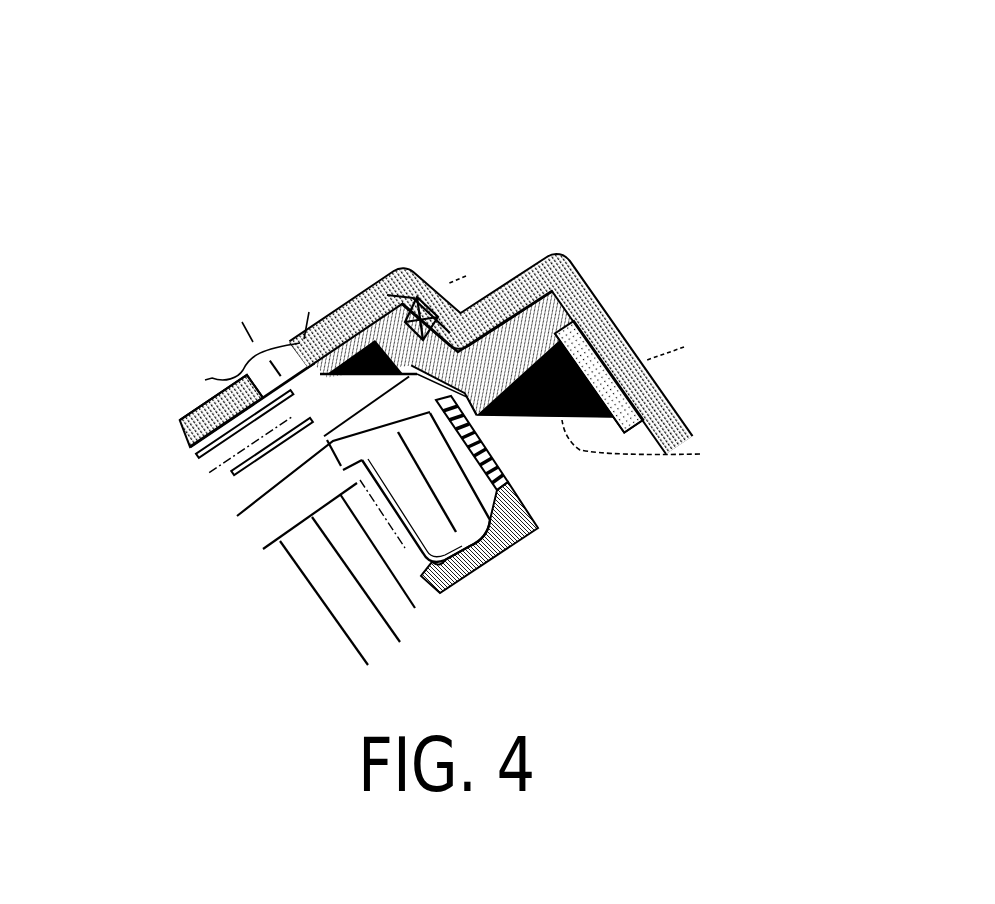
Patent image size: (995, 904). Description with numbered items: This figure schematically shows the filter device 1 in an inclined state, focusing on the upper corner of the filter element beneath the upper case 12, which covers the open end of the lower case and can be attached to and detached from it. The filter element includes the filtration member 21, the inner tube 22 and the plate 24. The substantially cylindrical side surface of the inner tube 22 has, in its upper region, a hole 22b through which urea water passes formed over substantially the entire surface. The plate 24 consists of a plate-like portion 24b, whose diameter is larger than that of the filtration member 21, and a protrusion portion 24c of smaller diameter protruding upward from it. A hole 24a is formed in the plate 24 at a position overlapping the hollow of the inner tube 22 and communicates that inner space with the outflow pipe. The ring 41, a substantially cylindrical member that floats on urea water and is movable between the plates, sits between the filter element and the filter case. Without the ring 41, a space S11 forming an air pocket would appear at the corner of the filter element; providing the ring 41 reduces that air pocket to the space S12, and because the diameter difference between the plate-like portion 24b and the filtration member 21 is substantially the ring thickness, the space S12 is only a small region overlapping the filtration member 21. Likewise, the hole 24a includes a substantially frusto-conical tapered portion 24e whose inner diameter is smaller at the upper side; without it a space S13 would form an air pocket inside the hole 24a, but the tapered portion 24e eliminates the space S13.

The filter device 1 is at (651, 34).
The upper case 12 is at (243, 392).
The filtration member 21 is at (543, 457).
The inner tube 22 is at (536, 501).
The hole 22b is at (513, 487).
The plate 24 is at (489, 399).
The hole 24a is at (540, 409).
The plate-like portion 24b is at (450, 352).
The protrusion portion 24c is at (489, 399).
The tapered portion 24e is at (366, 385).
The ring 41 is at (599, 377).
The space S11 is at (684, 347).
The space S12 is at (700, 454).
The space S13 is at (466, 276).